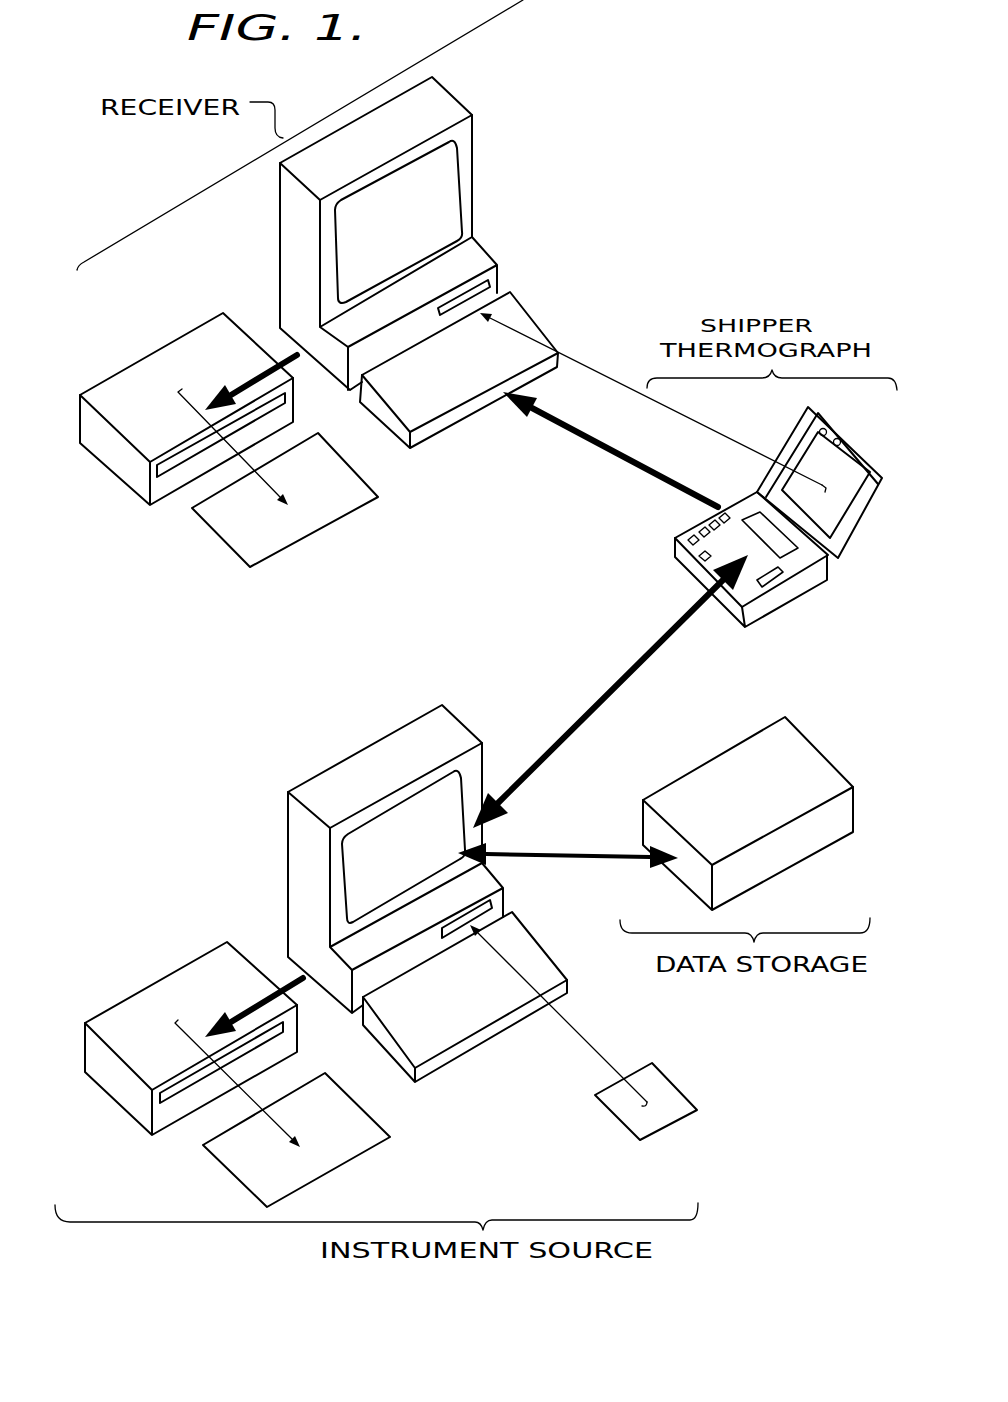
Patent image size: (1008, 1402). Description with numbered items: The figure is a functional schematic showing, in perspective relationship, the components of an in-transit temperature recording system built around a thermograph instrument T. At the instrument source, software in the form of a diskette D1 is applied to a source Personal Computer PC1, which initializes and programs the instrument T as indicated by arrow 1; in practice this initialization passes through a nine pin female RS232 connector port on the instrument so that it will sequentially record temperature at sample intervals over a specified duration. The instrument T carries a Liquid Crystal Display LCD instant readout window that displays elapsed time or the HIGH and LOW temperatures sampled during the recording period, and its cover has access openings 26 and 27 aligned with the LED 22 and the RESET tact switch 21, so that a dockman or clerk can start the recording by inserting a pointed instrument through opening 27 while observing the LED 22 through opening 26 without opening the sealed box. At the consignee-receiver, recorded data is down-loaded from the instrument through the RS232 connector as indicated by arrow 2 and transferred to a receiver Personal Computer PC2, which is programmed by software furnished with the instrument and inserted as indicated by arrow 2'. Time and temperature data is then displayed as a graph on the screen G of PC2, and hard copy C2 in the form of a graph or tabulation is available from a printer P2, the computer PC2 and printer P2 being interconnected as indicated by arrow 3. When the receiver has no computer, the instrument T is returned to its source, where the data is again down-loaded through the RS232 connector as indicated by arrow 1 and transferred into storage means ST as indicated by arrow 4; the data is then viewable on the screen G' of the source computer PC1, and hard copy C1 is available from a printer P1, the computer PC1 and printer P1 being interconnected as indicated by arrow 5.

The Personal Computer PC2 is at (480, 108).
The screen G is at (437, 222).
The arrow 3 is at (280, 357).
The printer P2 is at (138, 357).
The hard copy C2 is at (242, 531).
The arrow 2' is at (653, 398).
The arrow 2 is at (610, 449).
The thermograph instrument T is at (666, 521).
The access opening 26 is at (840, 442).
The access opening 27 is at (826, 430).
The Liquid Crystal Display LCD is at (750, 510).
The LED 22 is at (680, 548).
The RESET switch 21 is at (703, 562).
The RS232 connector RS232 is at (767, 598).
The arrow 1 is at (613, 677).
The storage means ST is at (829, 739).
The arrow 4 is at (572, 843).
The Personal Computer PC1 is at (343, 752).
The screen G' is at (335, 847).
The arrow 5 is at (283, 980).
The printer P1 is at (180, 992).
The hard copy C1 is at (221, 1157).
The diskette D1 is at (678, 1088).